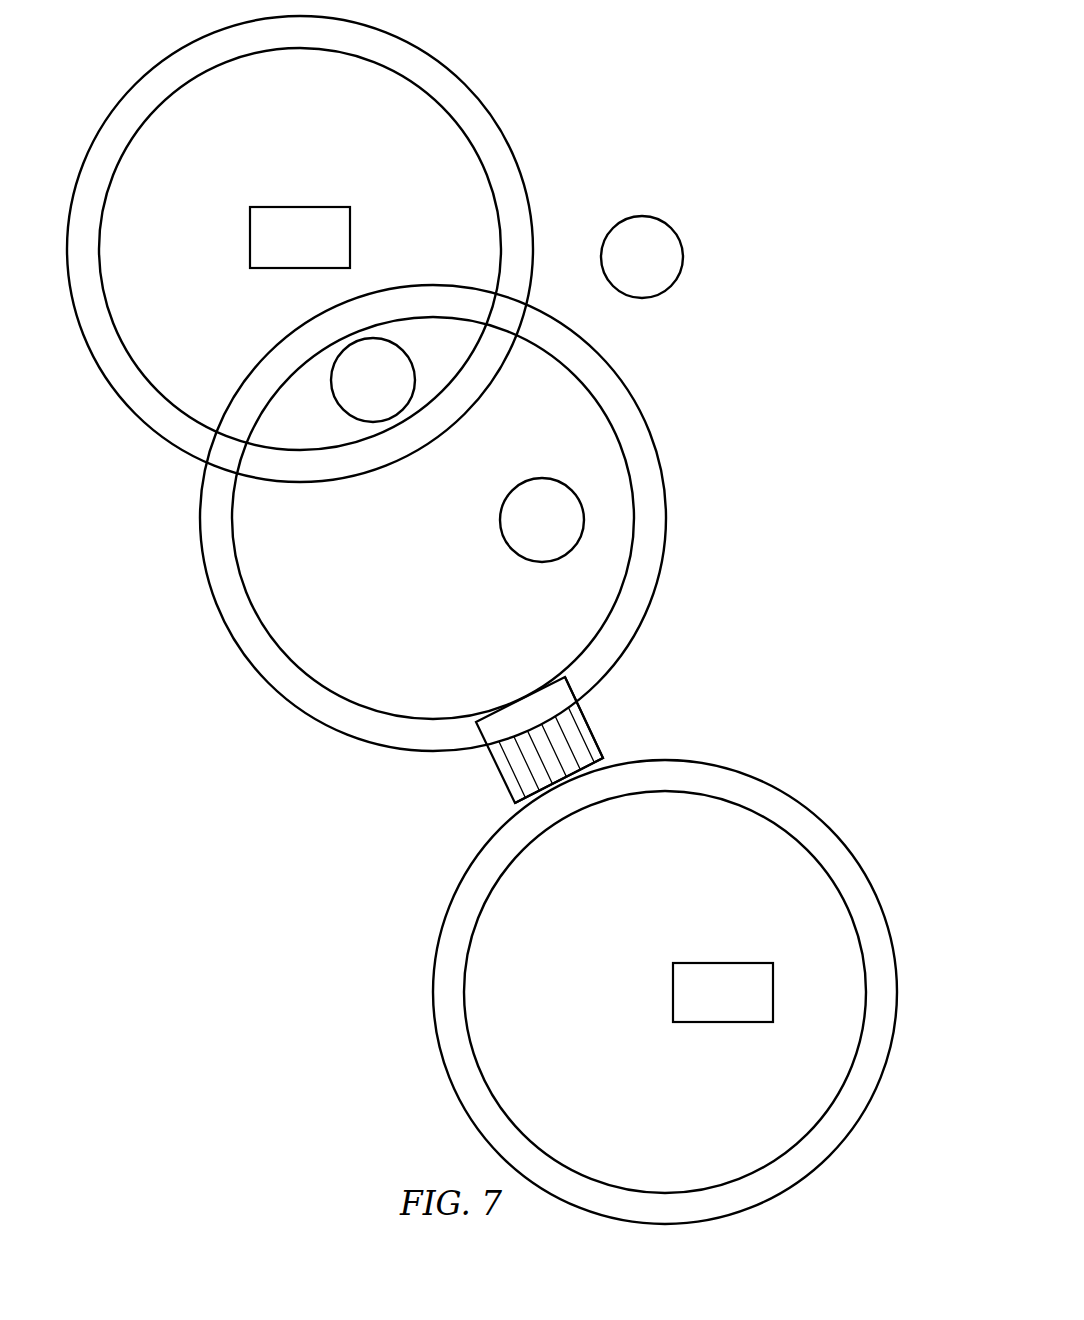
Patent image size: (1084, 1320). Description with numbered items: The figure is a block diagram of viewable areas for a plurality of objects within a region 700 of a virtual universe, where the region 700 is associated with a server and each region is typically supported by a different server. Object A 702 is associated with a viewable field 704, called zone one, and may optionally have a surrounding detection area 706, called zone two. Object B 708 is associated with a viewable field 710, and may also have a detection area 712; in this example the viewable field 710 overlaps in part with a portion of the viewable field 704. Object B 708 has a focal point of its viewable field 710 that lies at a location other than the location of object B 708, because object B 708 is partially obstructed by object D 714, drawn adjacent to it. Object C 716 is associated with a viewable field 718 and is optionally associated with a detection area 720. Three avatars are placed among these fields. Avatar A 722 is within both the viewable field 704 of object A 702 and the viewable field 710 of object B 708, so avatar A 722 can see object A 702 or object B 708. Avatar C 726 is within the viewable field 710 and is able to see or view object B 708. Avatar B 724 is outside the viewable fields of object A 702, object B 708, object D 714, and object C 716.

The region 700 is at (580, 111).
The object A 702 is at (283, 206).
The viewable field (zone 1) 704 is at (358, 130).
The detection area (zone 2) 706 is at (206, 52).
The object B 708 is at (523, 705).
The viewable field (zone 1) 710 is at (429, 603).
The detection area (zone 2) 712 is at (418, 735).
The object D 714 is at (600, 734).
The object C 716 is at (731, 1024).
The viewable field 718 is at (640, 1077).
The detection area (zone 2) 720 is at (628, 1200).
The avatar A 722 is at (333, 398).
The avatar B 724 is at (683, 258).
The avatar C 726 is at (500, 520).